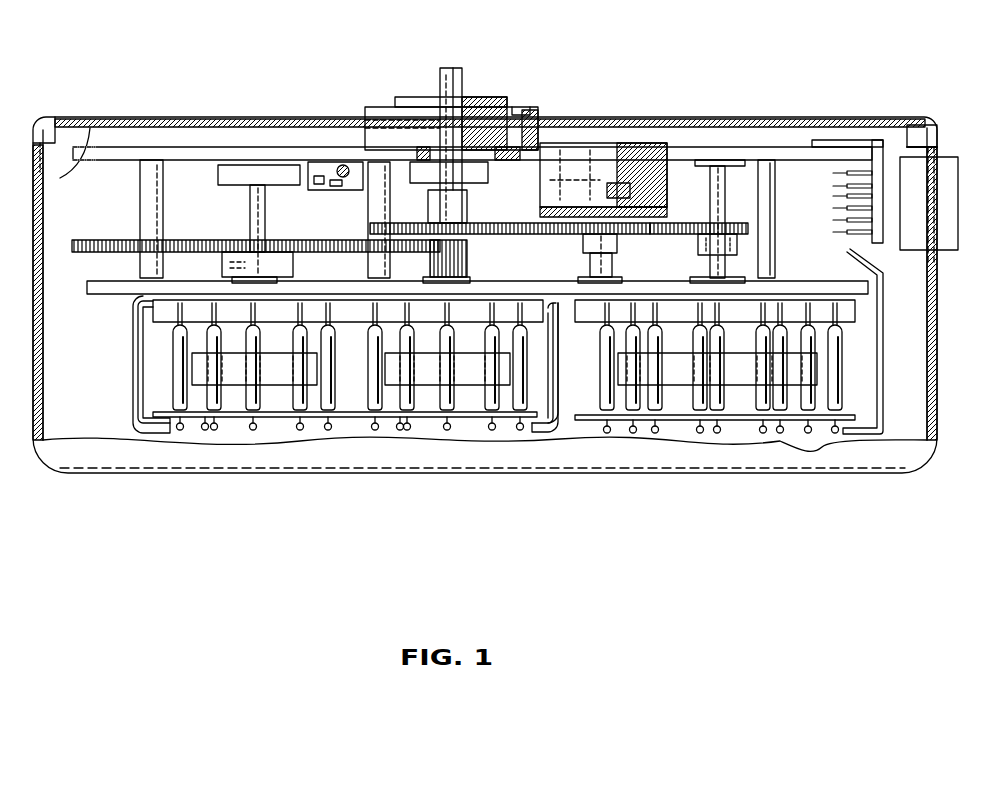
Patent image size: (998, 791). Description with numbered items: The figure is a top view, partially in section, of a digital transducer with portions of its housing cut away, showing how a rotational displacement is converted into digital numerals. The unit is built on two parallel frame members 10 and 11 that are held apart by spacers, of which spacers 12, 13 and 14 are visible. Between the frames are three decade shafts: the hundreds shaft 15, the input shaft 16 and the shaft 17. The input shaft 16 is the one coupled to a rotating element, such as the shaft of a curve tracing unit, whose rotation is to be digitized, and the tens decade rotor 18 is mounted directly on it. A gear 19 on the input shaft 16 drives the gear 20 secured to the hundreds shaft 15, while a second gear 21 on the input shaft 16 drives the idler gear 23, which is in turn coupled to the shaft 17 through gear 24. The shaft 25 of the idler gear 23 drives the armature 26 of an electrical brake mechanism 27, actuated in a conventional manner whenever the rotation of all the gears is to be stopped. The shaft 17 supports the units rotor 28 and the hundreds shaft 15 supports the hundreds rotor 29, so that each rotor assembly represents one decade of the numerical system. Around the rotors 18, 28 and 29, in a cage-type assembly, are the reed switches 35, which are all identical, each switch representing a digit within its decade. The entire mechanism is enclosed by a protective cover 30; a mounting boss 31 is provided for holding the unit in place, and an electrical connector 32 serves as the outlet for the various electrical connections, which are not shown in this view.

The frame member 10 is at (795, 147).
The frame member 11 is at (800, 283).
The spacer 12 is at (163, 218).
The spacer 13 is at (368, 196).
The spacer 14 is at (777, 197).
The hundreds shaft 15 is at (265, 216).
The input shaft 16 is at (445, 74).
The shaft 17 is at (725, 201).
The tens decade rotor 18 is at (462, 382).
The gear 19 is at (467, 264).
The gear 20 is at (305, 252).
The gear 21 is at (486, 223).
The idler gear 23 is at (673, 223).
The gear 24 is at (700, 236).
The shaft 25 is at (617, 264).
The armature 26 is at (555, 213).
The electrical brake mechanism 27 is at (660, 145).
The units rotor 28 is at (733, 382).
The hundreds rotor 29 is at (272, 382).
The protective cover 30 is at (937, 300).
The mounting boss 31 is at (498, 104).
The electrical connector 32 is at (958, 180).
The reed switches 35 is at (519, 400).